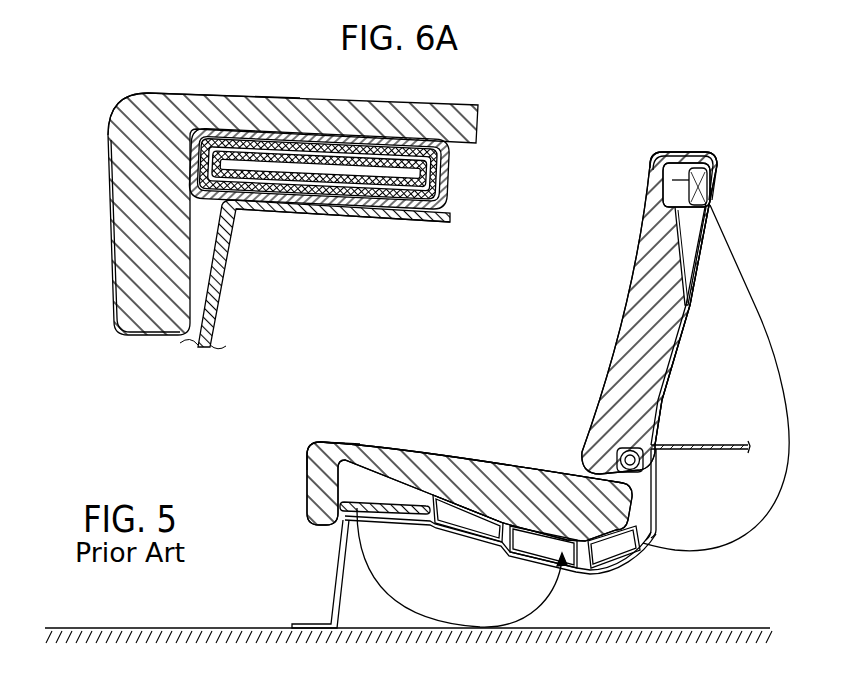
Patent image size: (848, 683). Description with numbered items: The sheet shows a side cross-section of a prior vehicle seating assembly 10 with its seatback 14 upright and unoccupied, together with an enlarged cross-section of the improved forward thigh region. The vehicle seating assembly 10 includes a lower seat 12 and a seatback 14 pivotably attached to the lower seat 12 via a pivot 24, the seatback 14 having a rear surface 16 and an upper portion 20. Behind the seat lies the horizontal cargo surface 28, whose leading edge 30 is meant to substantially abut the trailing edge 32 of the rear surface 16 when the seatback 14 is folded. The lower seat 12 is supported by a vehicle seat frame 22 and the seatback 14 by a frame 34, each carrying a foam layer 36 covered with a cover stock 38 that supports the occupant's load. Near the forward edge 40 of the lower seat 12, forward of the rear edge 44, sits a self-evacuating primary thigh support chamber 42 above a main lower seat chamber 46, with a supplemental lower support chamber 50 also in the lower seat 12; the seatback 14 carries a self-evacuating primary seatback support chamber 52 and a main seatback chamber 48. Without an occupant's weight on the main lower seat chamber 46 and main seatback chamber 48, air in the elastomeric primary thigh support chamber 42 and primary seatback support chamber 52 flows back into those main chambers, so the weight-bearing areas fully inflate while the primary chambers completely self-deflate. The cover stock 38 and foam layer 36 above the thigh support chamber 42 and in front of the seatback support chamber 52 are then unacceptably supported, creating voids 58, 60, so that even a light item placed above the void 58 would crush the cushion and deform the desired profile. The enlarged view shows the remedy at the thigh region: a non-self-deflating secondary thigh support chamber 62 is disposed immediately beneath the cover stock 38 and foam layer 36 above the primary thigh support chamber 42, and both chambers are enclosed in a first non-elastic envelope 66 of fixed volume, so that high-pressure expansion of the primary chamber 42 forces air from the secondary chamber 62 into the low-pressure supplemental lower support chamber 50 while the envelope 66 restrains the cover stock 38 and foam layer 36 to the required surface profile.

In FIG. 5, the vehicle seating assembly 10 is at (636, 160).
In FIG. 6A, the lower seat 12 is at (255, 234).
In FIG. 5, the lower seat 12 is at (468, 461).
In FIG. 5, the seatback 14 is at (597, 387).
In FIG. 5, the rear surface 16 is at (700, 322).
In FIG. 5, the upper portion 20 is at (658, 145).
In FIG. 6A, the vehicle seat frame 22 is at (322, 207).
In FIG. 5, the vehicle seat frame 22 is at (540, 567).
In FIG. 5, the pivot 24 is at (655, 462).
In FIG. 5, the horizontal cargo surface 28 is at (707, 440).
In FIG. 5, the leading edge 30 is at (657, 440).
In FIG. 5, the trailing edge 32 is at (645, 490).
In FIG. 5, the frame 34 is at (685, 312).
In FIG. 6A, the foam layer 36 is at (108, 135).
In FIG. 5, the foam layer 36 is at (620, 337).
In FIG. 6A, the cover stock 38 is at (108, 240).
In FIG. 5, the cover stock 38 is at (642, 222).
In FIG. 5, the forward edge 40 is at (322, 446).
In FIG. 6A, the self-evacuating primary thigh support chamber 42 is at (297, 203).
In FIG. 5, the self-evacuating primary thigh support chamber 42 is at (330, 537).
In FIG. 5, the rear edge 44 is at (622, 538).
In FIG. 5, the main lower seat chamber 46 is at (507, 557).
In FIG. 5, the main seatback chamber 48 is at (595, 568).
In FIG. 5, the supplemental lower support chamber 50 is at (441, 531).
In FIG. 6A, the self-evacuating primary seatback support chamber 52 is at (362, 155).
In FIG. 5, the self-evacuating primary seatback support chamber 52 is at (687, 193).
In FIG. 5, the void 58 is at (360, 482).
In FIG. 5, the void 60 is at (681, 177).
In FIG. 6A, the secondary thigh support chamber 62 is at (272, 132).
In FIG. 6A, the first non-elastic envelope 66 is at (455, 175).